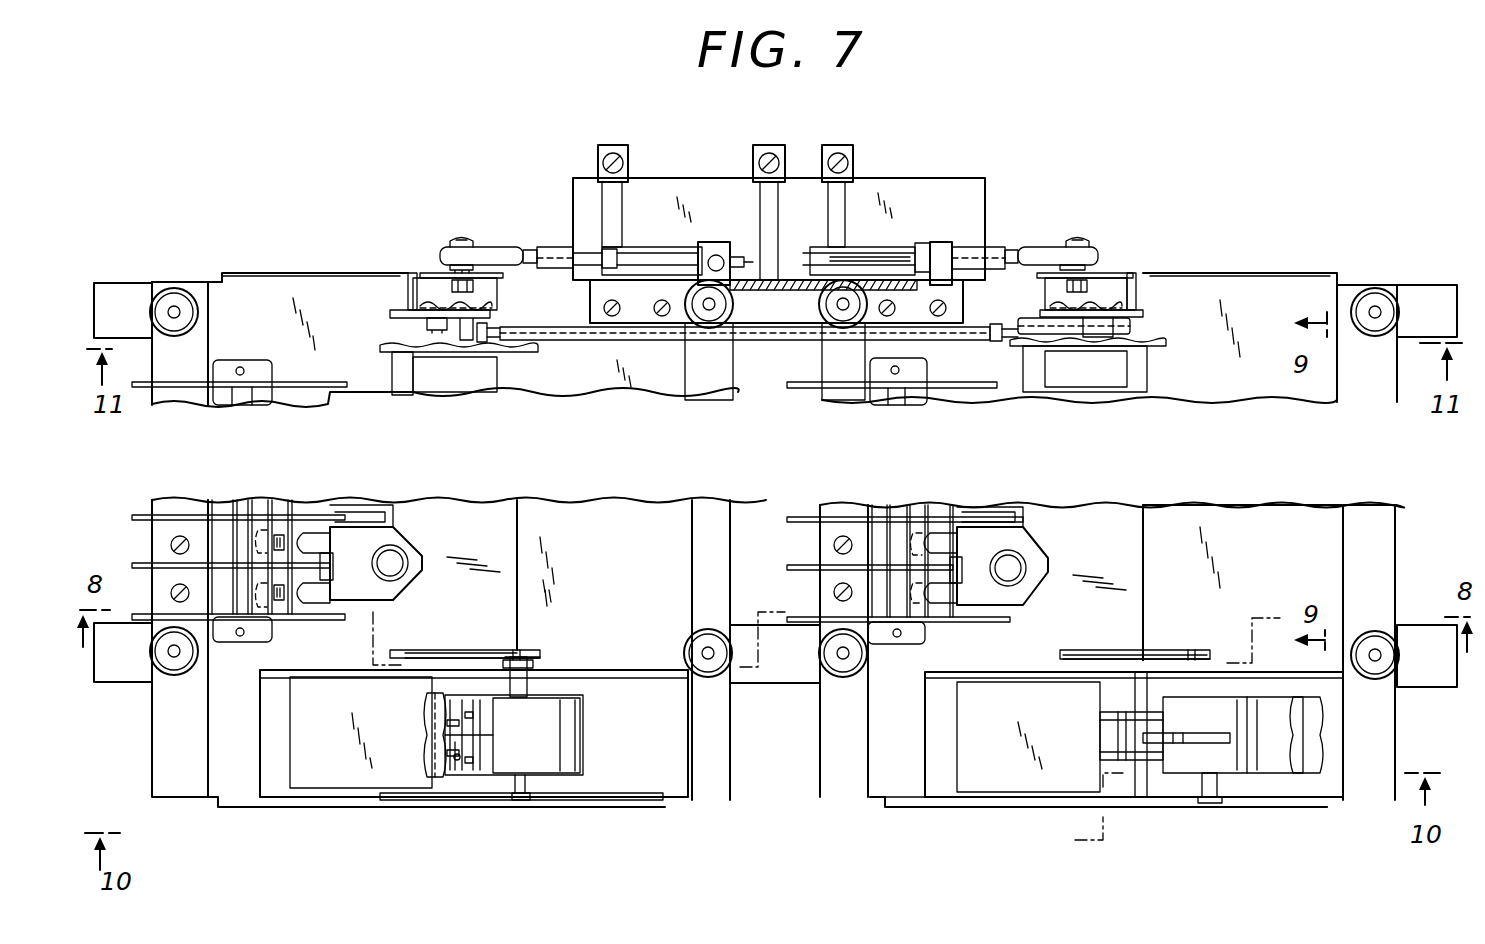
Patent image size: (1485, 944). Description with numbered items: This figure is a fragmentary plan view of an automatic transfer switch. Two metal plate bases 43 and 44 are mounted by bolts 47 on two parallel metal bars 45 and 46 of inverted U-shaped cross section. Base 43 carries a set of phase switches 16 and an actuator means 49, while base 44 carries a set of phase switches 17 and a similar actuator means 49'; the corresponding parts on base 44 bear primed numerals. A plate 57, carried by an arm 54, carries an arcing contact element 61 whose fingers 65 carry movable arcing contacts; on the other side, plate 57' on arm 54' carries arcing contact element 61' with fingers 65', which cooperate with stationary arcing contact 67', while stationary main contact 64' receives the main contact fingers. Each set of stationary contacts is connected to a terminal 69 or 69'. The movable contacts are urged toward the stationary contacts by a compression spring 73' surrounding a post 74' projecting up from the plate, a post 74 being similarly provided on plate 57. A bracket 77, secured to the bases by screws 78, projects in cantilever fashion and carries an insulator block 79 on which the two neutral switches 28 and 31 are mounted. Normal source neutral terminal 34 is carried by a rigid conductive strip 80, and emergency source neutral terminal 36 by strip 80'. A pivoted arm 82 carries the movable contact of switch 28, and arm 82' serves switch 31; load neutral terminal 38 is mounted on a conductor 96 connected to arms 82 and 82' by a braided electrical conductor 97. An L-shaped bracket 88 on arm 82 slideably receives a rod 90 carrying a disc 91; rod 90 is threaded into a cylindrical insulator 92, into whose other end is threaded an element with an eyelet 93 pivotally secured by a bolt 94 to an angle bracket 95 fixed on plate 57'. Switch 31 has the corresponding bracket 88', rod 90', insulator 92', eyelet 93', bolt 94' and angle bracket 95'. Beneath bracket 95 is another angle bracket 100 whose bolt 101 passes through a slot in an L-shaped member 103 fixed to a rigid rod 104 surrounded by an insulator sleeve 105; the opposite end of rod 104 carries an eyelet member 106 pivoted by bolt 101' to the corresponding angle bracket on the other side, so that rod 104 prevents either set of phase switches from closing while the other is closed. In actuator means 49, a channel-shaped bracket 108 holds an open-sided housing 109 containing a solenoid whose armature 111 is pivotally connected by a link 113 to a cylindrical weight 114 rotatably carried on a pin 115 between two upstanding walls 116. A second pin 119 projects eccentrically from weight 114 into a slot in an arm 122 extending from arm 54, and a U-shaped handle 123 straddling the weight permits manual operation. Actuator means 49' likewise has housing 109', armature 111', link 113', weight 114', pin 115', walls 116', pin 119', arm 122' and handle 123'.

The phase switches 16 is at (951, 472).
The phase switches 17 is at (308, 460).
The neutral switch 28 is at (561, 186).
The neutral switch 31 is at (824, 241).
The normal source neutral terminal 34 is at (613, 150).
The emergency source neutral terminal 36 is at (845, 152).
The load neutral terminal 38 is at (770, 152).
The metal plate base 43 is at (1292, 282).
The metal plate base 44 is at (280, 281).
The metal bar 45 is at (1430, 284).
The metal bar 46 is at (1425, 688).
The bolt 47 is at (176, 306).
The actuator means 49 is at (1134, 851).
The actuator means 49' is at (474, 830).
The arm 54 is at (1135, 634).
The arm 54' is at (465, 627).
The plate 57 is at (1118, 526).
The plate 57' is at (588, 596).
The arcing contact element 61 is at (1017, 564).
The arcing contact element 61' is at (398, 563).
The stationary main contact 64' is at (272, 537).
The finger 65 is at (912, 537).
The finger 65' is at (339, 556).
The stationary arcing contact 67' is at (256, 579).
The terminal 69 is at (890, 569).
The terminal 69' is at (216, 562).
The compression spring 73' is at (384, 508).
The post 74 is at (1038, 554).
The post 74' is at (424, 546).
The bracket 77 is at (960, 290).
The screw 78 is at (611, 302).
The insulator block 79 is at (910, 185).
The rigid conductive strip 80 is at (643, 189).
The rigid conductive strip 80' is at (868, 190).
The arm 82 is at (637, 239).
The arm 82' is at (869, 238).
The L-shaped bracket 88 is at (723, 212).
The L-shaped bracket 88' is at (943, 238).
The rod 90 is at (670, 220).
The rod 90' is at (870, 238).
The disc 91 is at (745, 255).
The cylindrical insulator 92 is at (548, 231).
The cylindrical insulator 92' is at (1009, 227).
The eyelet 93 is at (468, 233).
The eyelet 93' is at (1092, 239).
The bolt 94 is at (477, 210).
The bolt 94' is at (1107, 216).
The angle bracket 95 is at (486, 336).
The angle bracket 95' is at (1108, 332).
The conductor 96 is at (775, 205).
The braided electrical conductor 97 is at (743, 290).
The angle bracket 100 is at (397, 318).
The bolt 101 is at (384, 331).
The bolt 101' is at (1127, 286).
The L-shaped member 103 is at (392, 322).
The rigid rod 104 is at (487, 326).
The insulator sleeve 105 is at (670, 341).
The eyelet member 106 is at (1125, 325).
The channel-shaped bracket 108 is at (277, 785).
The open-sided housing 109 is at (1028, 765).
The open-sided housing 109' is at (361, 762).
The armature 111 is at (1142, 780).
The armature 111' is at (454, 795).
The link 113 is at (1223, 735).
The link 113' is at (514, 735).
The cylindrical weight 114 is at (1289, 775).
The cylindrical weight 114' is at (580, 735).
The pin 115 is at (1244, 806).
The pin 115' is at (570, 718).
The upstanding wall 116 is at (1106, 826).
The upstanding wall 116' is at (521, 829).
The second pin 119 is at (1196, 700).
The second pin 119' is at (567, 632).
The arm 122 is at (1136, 631).
The arm 122' is at (472, 634).
The U-shaped handle 123 is at (1340, 780).
The U-shaped handle 123' is at (404, 731).